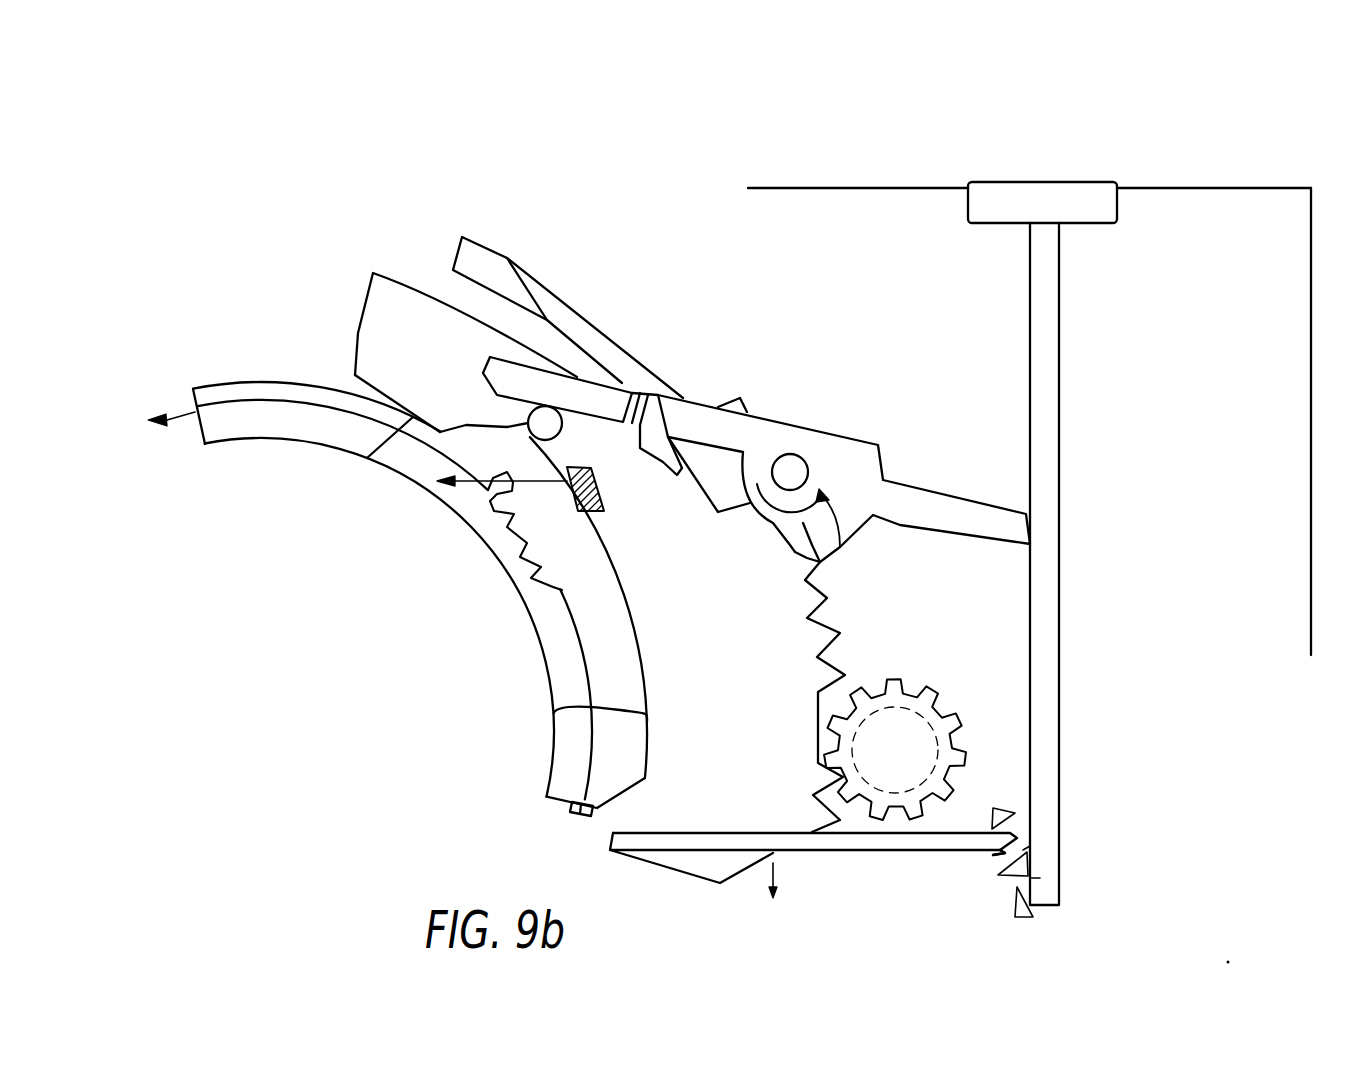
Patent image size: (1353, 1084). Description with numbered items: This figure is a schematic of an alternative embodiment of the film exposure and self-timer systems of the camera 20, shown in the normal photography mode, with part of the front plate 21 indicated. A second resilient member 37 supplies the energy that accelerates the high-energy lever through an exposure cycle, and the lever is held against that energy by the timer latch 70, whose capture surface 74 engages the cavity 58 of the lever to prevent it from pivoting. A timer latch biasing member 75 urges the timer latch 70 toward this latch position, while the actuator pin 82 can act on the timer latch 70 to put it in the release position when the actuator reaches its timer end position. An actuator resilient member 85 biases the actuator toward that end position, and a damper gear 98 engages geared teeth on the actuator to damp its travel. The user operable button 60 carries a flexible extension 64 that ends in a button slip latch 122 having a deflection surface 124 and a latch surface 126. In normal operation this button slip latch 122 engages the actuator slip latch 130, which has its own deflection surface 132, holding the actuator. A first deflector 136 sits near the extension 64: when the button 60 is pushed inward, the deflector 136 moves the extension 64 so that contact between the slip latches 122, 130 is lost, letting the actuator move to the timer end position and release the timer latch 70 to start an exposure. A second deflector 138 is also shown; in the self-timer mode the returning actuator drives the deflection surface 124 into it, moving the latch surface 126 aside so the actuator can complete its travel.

The camera 20 is at (1238, 168).
The front plate 21 is at (1182, 187).
The second resilient member 37 is at (513, 477).
The cavity 58 is at (603, 497).
The button 60 is at (1048, 194).
The extension 64 is at (1050, 421).
The timer latch 70 is at (740, 423).
The capture surface 74 is at (660, 402).
The timer latch biasing member 75 is at (840, 547).
The actuator pin 82 is at (540, 427).
The actuator resilient member 85 is at (537, 540).
The damper gear 98 is at (900, 720).
The button slip latch 122 is at (1020, 865).
The deflection surface 124 is at (1023, 850).
The latch surface 126 is at (1035, 878).
The actuator slip latch 130 is at (850, 843).
The deflection surface 132 is at (1000, 855).
The first deflector 136 is at (1022, 920).
The second deflector 138 is at (998, 807).